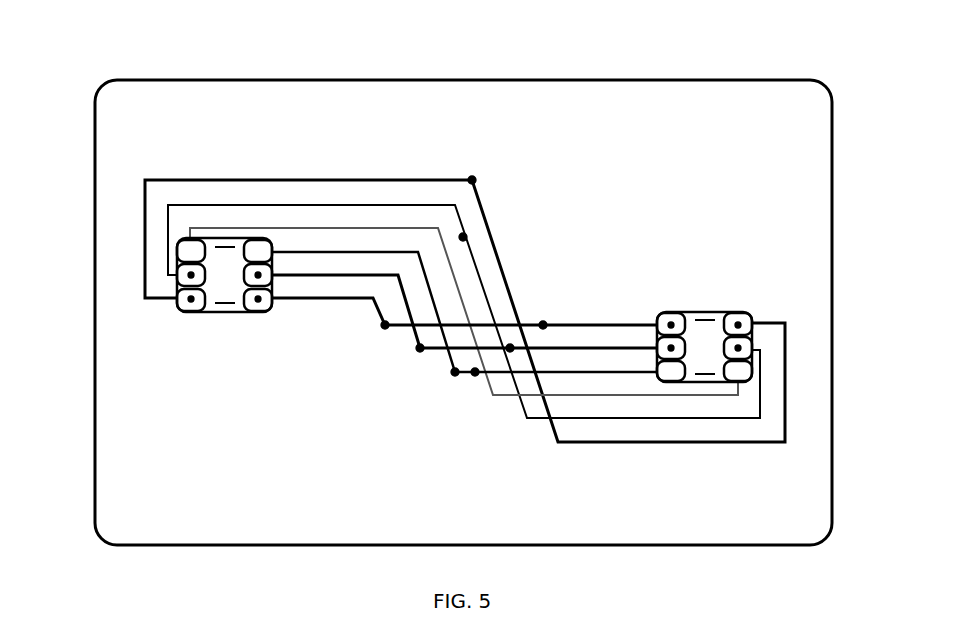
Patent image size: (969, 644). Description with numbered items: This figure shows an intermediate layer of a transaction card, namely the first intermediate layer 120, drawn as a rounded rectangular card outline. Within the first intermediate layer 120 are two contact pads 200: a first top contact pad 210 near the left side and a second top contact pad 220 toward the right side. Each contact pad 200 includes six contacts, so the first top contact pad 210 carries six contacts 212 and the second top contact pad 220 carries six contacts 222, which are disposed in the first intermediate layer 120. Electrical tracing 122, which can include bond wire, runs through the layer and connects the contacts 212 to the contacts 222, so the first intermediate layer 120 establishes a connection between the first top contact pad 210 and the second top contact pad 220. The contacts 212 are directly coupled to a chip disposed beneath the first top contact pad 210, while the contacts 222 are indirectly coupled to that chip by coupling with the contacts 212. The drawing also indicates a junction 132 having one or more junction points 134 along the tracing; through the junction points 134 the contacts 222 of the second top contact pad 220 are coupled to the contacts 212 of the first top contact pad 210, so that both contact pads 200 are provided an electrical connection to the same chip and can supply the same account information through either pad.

The first intermediate layer 120 is at (790, 128).
The electrical tracing 122 is at (167, 205).
The junction 132 is at (505, 155).
The junction points 134 is at (462, 235).
The contact pads 200 is at (464, 265).
The first top contact pad 210 is at (144, 275).
The contacts 212 is at (177, 277).
The second top contact pad 220 is at (784, 385).
The contacts 222 is at (733, 352).